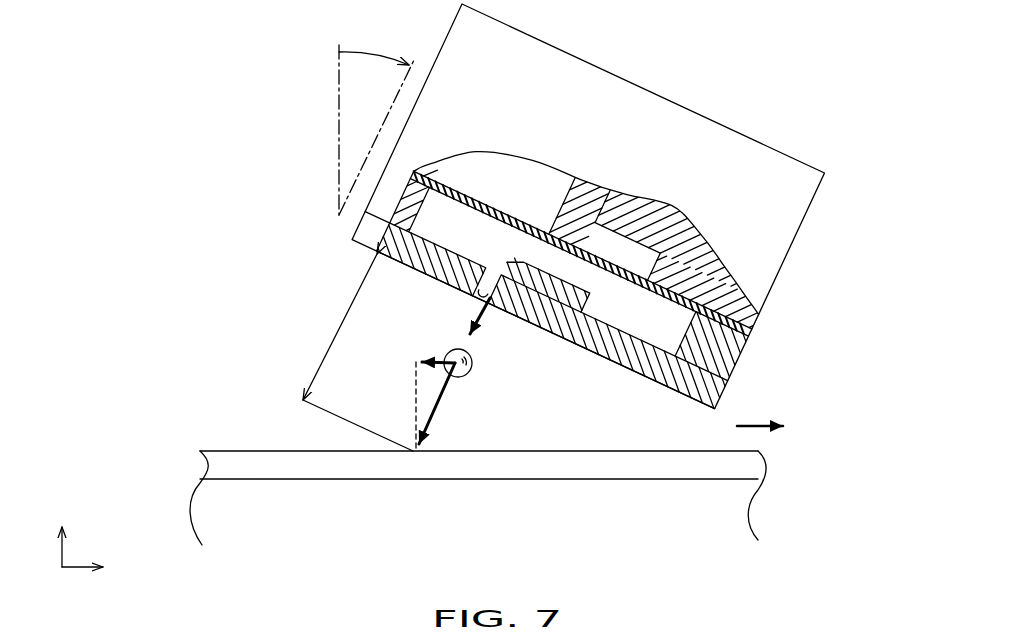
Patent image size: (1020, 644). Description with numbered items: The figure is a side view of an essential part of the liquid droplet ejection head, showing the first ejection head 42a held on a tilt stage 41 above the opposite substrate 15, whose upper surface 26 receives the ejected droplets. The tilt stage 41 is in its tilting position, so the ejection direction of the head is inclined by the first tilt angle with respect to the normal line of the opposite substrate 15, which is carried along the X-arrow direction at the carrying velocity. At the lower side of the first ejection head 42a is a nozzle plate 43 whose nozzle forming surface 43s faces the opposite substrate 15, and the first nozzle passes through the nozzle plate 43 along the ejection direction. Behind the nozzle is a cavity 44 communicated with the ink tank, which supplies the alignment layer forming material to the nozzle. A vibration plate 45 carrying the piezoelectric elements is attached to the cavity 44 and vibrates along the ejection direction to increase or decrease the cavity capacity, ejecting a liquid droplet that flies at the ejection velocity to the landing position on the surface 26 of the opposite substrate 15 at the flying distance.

The opposite substrate 15 is at (202, 494).
The recording surface of medium 26 is at (237, 450).
The tilt stage 41 is at (793, 292).
The first ejection head 42a is at (286, 164).
The nozzle plate 43 is at (668, 393).
The nozzle forming surface 43s is at (610, 367).
The cavity 44 is at (463, 237).
The vibration plate 45 is at (488, 200).